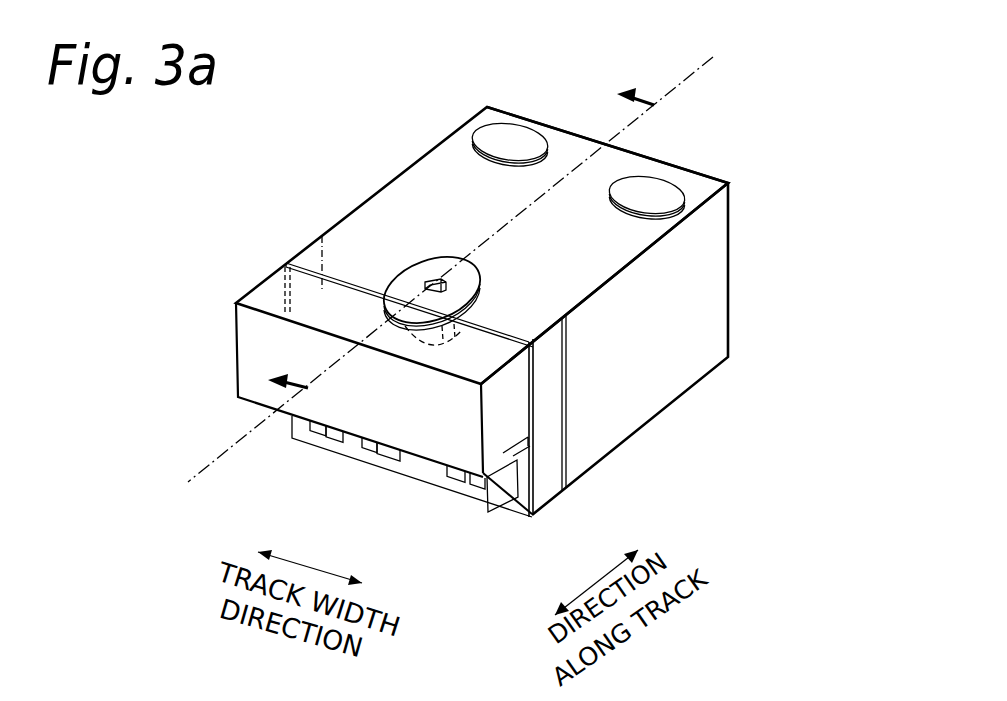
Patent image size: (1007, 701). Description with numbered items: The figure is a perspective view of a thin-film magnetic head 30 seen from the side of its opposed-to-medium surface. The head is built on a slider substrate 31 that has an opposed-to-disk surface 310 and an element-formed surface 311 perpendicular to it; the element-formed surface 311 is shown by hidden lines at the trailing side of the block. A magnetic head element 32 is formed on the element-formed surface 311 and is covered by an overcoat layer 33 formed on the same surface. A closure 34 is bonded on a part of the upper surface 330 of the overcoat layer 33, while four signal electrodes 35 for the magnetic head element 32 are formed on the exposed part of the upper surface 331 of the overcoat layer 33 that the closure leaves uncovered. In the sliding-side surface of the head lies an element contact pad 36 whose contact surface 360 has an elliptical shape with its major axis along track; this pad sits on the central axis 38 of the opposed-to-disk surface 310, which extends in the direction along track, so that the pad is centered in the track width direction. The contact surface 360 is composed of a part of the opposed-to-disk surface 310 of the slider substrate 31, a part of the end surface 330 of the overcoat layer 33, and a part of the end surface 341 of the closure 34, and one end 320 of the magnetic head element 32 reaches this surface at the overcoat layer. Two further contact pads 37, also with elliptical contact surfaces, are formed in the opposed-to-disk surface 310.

The thin-film magnetic head 30 is at (362, 178).
The slider substrate 31 is at (655, 393).
The opposed-to-disk surface 310 is at (603, 263).
The element-formed surface 311 is at (336, 262).
The magnetic head element 32 is at (445, 330).
The one end of the magnetic head element 320 is at (428, 276).
The overcoat layer 33 is at (552, 497).
The upper surface (end surface) of the overcoat layer 330 is at (535, 327).
The exposed part of the upper surface of the overcoat layer 331 is at (291, 437).
The closure 34 is at (492, 445).
The end surface of the closure 341 is at (488, 363).
The signal electrodes 35 is at (372, 452).
The element contact pad 36 is at (444, 243).
The contact surface of the element contact pad 360 is at (477, 277).
The contact pads 37 is at (511, 142).
The central axis 38 is at (686, 77).